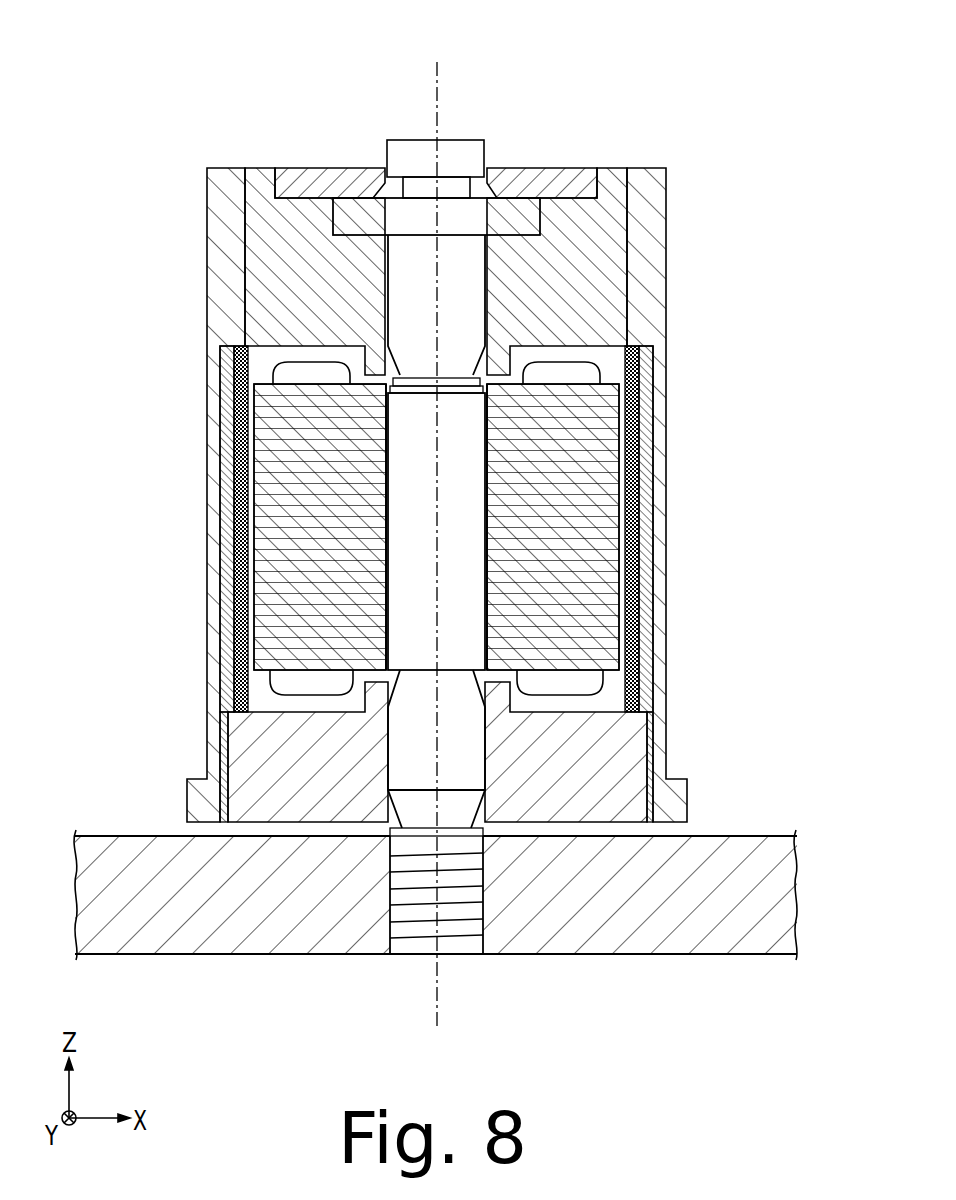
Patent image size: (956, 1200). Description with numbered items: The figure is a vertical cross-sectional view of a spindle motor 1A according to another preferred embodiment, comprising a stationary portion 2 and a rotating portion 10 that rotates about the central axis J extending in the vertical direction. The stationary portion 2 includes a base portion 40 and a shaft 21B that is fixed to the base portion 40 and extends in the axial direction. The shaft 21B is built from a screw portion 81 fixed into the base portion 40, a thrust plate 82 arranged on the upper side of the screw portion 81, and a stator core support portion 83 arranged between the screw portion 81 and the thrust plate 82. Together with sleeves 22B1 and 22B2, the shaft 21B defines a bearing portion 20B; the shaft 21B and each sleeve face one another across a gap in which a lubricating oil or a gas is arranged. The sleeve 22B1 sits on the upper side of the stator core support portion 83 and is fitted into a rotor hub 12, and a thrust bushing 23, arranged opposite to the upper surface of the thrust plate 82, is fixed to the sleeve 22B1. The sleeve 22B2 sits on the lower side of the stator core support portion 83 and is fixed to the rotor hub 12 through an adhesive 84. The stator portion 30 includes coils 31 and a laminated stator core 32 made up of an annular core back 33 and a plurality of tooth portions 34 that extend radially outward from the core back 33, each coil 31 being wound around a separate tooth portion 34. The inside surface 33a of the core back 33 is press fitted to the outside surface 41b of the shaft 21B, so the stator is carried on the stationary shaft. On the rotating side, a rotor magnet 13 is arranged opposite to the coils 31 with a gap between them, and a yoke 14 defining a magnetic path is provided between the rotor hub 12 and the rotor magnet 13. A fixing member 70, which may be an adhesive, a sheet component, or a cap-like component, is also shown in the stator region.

The spindle motor 1A is at (126, 86).
The rotating portion 10 is at (200, 170).
The rotor hub 12 is at (657, 285).
The sleeve 22B1 is at (627, 253).
The sleeve 22B2 is at (652, 748).
The thrust bushing 23 is at (547, 165).
The bearing portion 20B is at (502, 186).
The thrust plate 82 is at (322, 216).
The stator core support portion 83 is at (376, 548).
The screw portion 81 is at (376, 903).
The adhesive 84 is at (652, 762).
The stator portion 30 is at (240, 401).
The coil 31 is at (315, 362).
The stator core 32 is at (299, 373).
The core back 33 is at (487, 420).
The inside surface 33a is at (476, 453).
The tooth portion 34 is at (253, 468).
The rotor magnet 13 is at (638, 585).
The yoke 14 is at (653, 545).
The fixing member 70 is at (517, 373).
The outside surface 41b is at (493, 478).
The shaft 21B is at (387, 512).
The base portion 40 is at (593, 938).
The stationary portion 2 is at (690, 972).
The central axis J is at (433, 98).